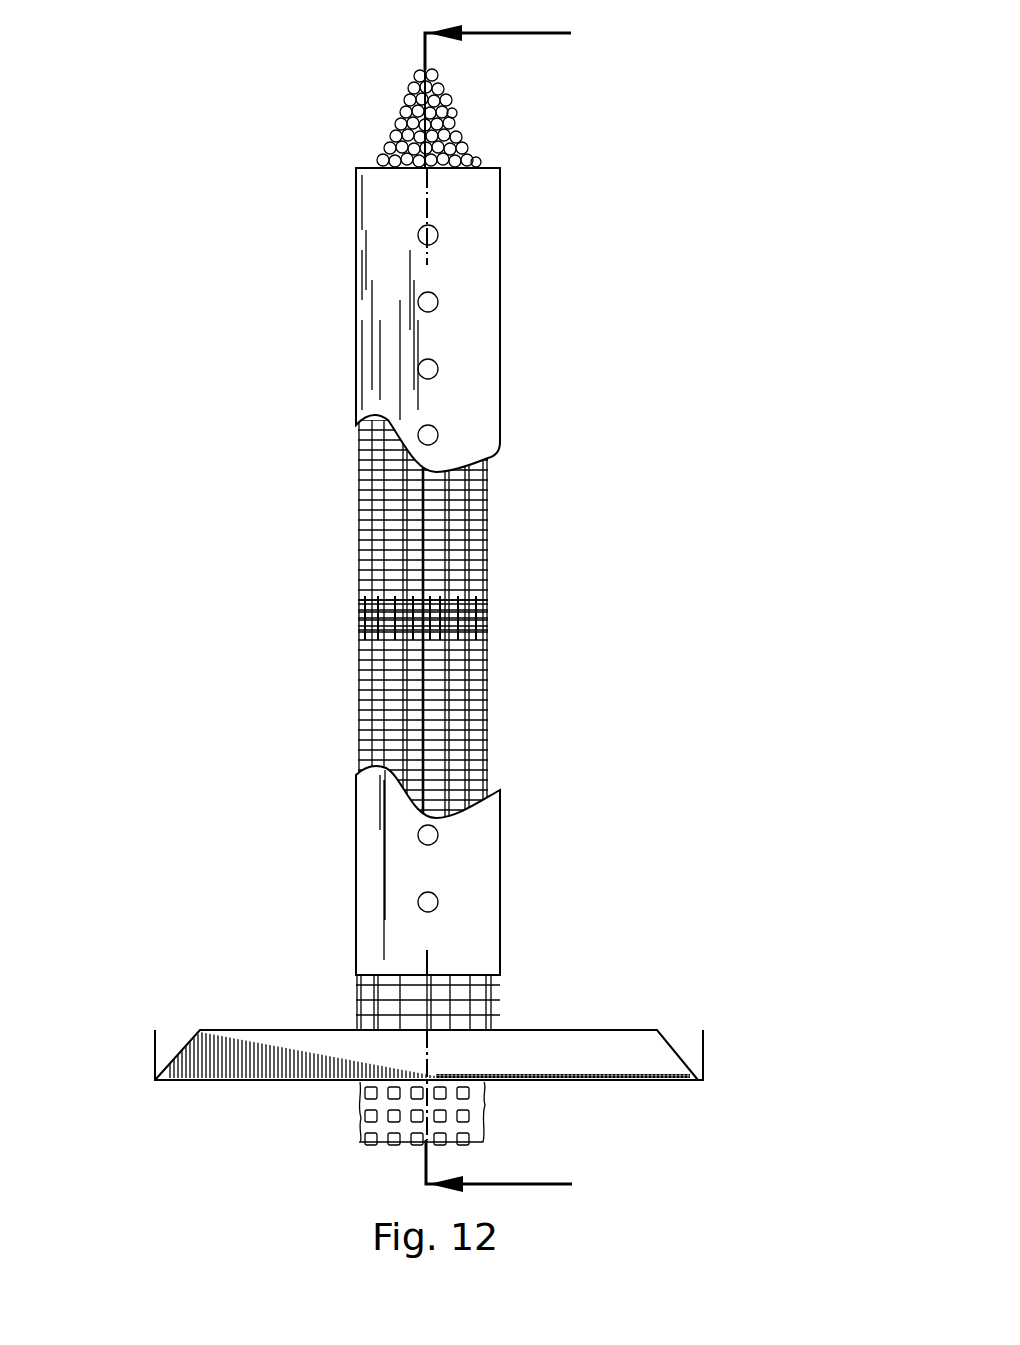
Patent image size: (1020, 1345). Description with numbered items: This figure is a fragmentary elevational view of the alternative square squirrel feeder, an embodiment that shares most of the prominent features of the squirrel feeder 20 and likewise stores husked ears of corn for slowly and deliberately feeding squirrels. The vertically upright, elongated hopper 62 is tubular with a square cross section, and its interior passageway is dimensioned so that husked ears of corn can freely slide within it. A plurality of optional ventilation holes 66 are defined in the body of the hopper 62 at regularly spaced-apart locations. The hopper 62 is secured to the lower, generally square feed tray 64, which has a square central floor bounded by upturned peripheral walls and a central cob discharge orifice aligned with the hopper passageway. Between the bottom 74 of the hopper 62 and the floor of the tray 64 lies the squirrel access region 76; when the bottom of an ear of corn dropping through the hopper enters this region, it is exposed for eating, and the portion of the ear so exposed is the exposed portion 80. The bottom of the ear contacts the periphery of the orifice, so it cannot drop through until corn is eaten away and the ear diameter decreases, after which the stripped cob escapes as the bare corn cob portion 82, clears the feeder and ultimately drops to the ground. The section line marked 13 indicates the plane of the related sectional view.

The squirrel feeder 20 is at (226, 472).
The hopper 62 is at (527, 228).
The ventilation holes 66 is at (432, 368).
The bottom of hopper 74 is at (392, 975).
The exposed portion of ear of corn 80 is at (472, 1002).
The squirrel access region 76 is at (341, 975).
The feed tray 64 is at (226, 1026).
The bare corn cob portion 82 is at (476, 1105).
The section line 13- 13 is at (523, 609).